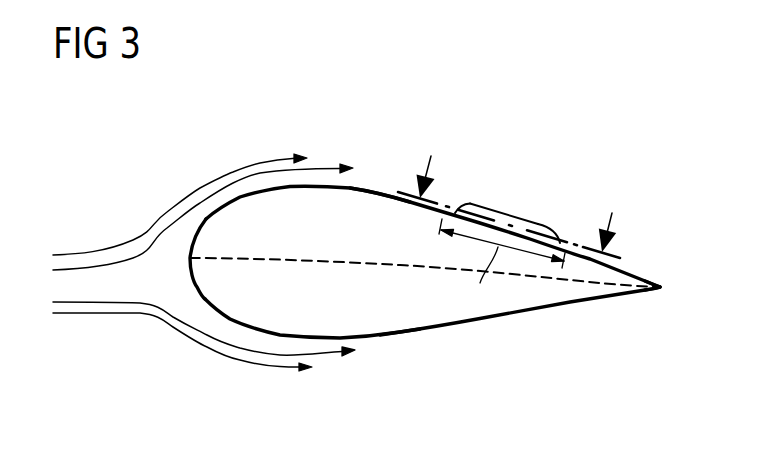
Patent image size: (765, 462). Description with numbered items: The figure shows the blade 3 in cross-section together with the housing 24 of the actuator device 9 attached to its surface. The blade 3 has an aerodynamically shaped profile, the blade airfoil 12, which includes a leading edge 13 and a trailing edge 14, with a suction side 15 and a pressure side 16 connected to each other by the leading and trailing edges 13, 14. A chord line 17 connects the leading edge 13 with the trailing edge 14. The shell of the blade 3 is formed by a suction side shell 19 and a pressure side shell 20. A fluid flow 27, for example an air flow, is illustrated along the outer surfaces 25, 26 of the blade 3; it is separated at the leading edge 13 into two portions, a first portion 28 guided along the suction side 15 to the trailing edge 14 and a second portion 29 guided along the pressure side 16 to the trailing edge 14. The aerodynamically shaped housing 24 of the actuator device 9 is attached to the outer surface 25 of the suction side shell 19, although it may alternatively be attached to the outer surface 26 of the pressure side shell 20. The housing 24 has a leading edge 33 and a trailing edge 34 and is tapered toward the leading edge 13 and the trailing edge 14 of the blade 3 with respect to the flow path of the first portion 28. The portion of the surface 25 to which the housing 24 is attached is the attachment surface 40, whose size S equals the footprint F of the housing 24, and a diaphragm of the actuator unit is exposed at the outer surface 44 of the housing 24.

The blade 3 is at (158, 125).
The actuator device 9 is at (523, 166).
The blade airfoil 12 is at (553, 309).
The leading edge 13 is at (190, 258).
The trailing edge 14 is at (663, 288).
The suction side 15 is at (433, 187).
The pressure side 16 is at (432, 337).
The chord line 17 is at (608, 283).
The suction side shell 19 is at (397, 190).
The pressure side shell 20 is at (470, 322).
The housing 24 is at (487, 205).
The outer surface 25 is at (375, 195).
The outer surface 26 is at (405, 333).
The fluid flow 27 is at (117, 247).
The first portion 28 is at (235, 170).
The second portion 29 is at (253, 364).
The leading edge 33 is at (465, 207).
The trailing edge 34 is at (556, 236).
The attachment surface 40 is at (540, 224).
The outer surface 44 is at (503, 208).